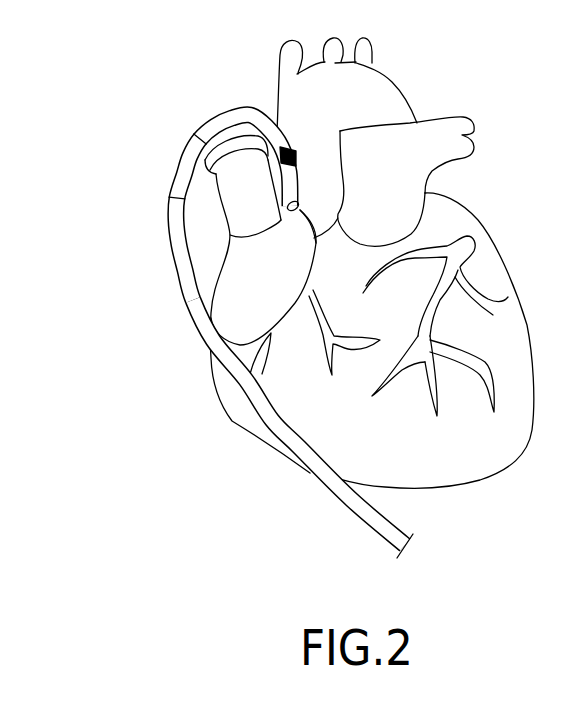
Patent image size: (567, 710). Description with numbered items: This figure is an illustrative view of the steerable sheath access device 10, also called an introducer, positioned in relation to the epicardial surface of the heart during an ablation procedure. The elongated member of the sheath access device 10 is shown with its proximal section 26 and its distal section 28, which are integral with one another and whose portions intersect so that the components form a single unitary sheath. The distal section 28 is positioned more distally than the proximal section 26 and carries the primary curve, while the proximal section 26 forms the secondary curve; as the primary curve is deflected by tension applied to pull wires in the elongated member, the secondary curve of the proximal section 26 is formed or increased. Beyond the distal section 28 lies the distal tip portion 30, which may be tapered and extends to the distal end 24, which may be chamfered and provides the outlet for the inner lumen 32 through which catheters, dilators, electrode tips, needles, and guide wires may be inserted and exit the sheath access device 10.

The sheath access device 10 is at (108, 181).
The distal end 24 is at (301, 203).
The proximal section 26 is at (282, 439).
The distal section 28 is at (223, 113).
The distal tip portion 30 is at (291, 177).
The inner lumen 32 is at (294, 211).